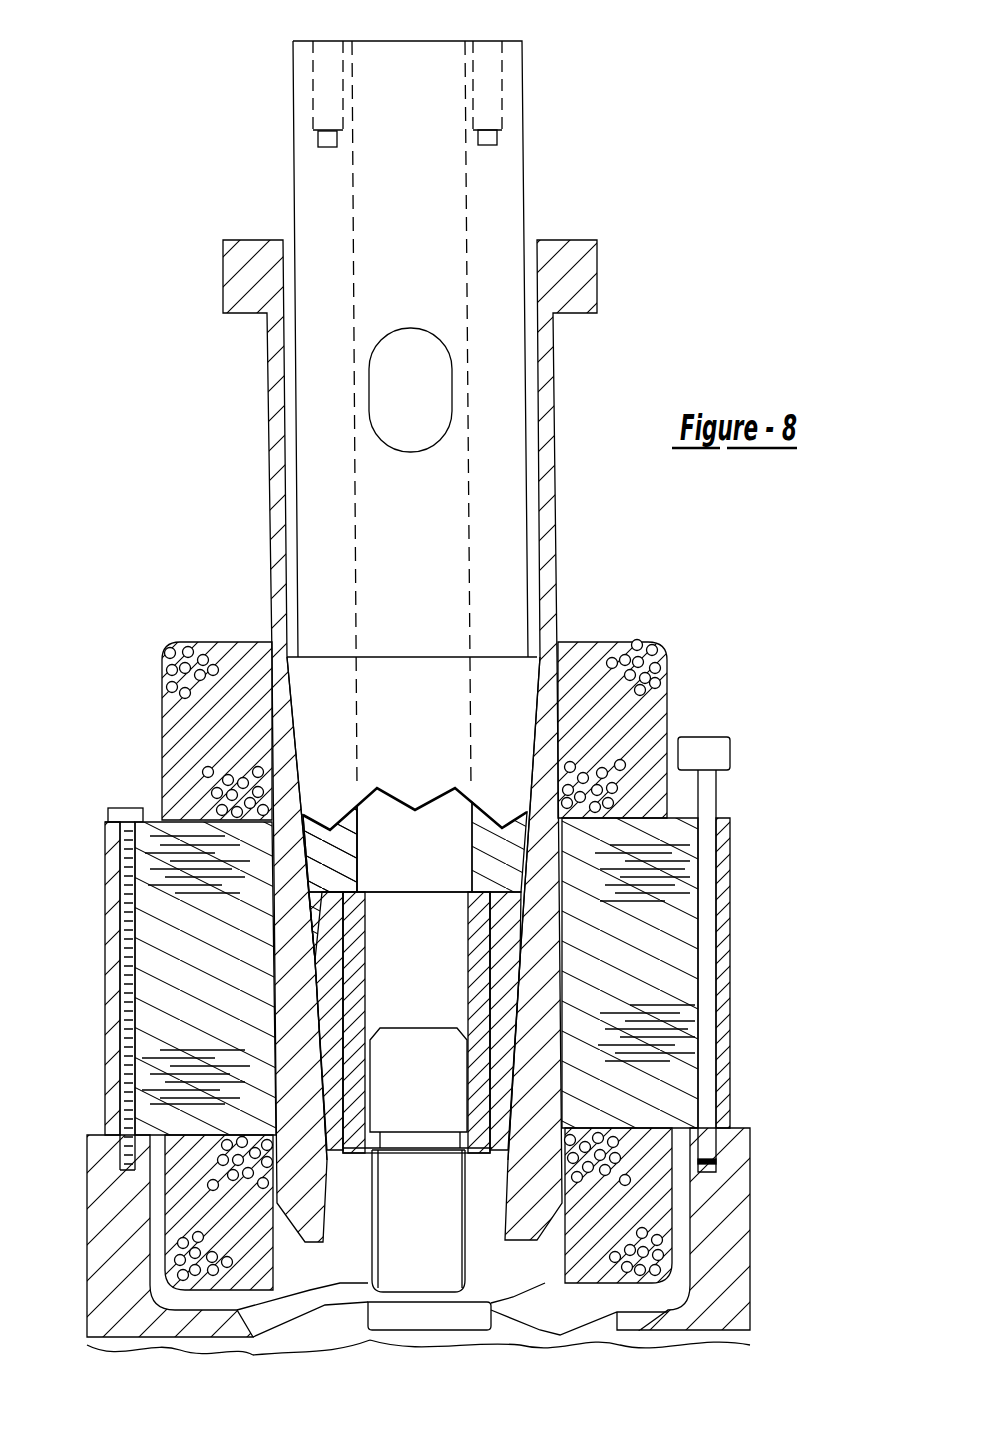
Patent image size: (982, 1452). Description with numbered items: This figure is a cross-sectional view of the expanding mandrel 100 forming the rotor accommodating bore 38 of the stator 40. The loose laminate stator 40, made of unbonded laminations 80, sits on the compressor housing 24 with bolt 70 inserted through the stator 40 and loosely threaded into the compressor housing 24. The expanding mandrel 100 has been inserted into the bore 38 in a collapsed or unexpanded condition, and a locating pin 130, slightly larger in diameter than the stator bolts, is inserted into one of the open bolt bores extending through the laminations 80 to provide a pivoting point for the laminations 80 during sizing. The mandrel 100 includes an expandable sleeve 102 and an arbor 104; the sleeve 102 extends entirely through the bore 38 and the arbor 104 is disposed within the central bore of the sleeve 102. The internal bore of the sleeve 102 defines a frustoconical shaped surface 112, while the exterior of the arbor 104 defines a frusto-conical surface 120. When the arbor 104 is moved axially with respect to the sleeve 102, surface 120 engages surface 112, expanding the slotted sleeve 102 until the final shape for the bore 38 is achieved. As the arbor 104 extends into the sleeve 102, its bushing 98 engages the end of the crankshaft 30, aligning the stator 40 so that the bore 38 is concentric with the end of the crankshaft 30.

The expanding mandrel 100 is at (558, 60).
The arbor 104 is at (497, 177).
The expandable sleeve 102 is at (270, 515).
The frusto-conical surface 120 is at (502, 700).
The stator 40 is at (138, 640).
The locating pin 130 is at (707, 745).
The frustoconical shaped surface 112 is at (315, 777).
The laminations 80 is at (722, 840).
The bolt 70 is at (119, 918).
The bushing 98 is at (480, 937).
The bore 38 is at (560, 1038).
The compressor housing 24 is at (735, 1273).
The crankshaft 30 is at (428, 1215).